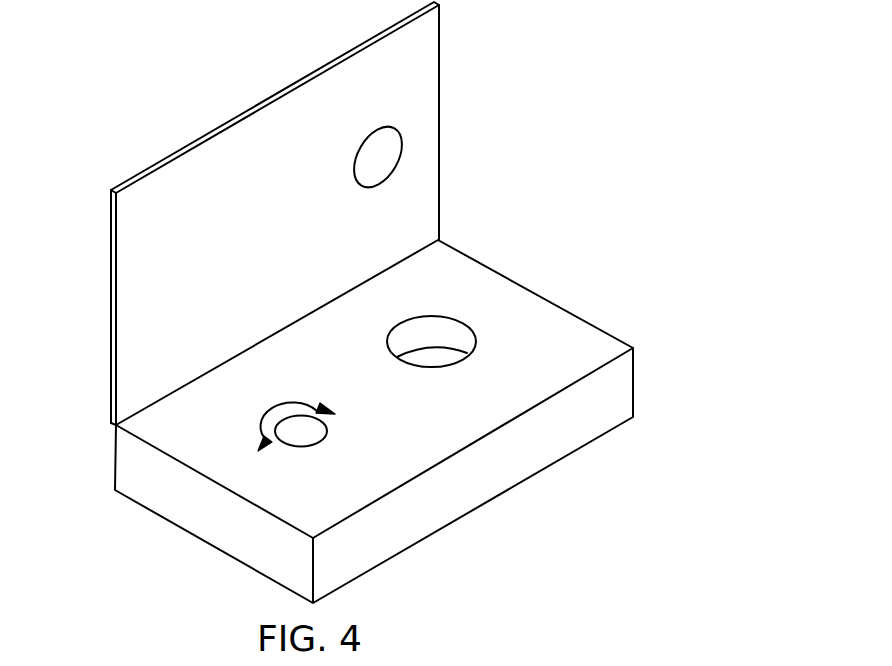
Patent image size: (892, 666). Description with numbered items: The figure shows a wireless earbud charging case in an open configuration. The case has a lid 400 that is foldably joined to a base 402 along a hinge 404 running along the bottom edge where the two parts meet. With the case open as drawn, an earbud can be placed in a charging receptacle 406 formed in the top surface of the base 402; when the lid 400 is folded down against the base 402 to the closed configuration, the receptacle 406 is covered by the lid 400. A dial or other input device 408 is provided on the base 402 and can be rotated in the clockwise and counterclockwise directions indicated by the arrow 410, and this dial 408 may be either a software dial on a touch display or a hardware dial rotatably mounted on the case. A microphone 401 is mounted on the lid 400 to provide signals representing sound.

The lid 400 is at (440, 121).
The microphone 401 is at (353, 182).
The base 402 is at (540, 293).
The hinge 404 is at (113, 418).
The charging receptacle 406 is at (440, 341).
The dial 408 is at (328, 432).
The arrow 410 is at (268, 426).